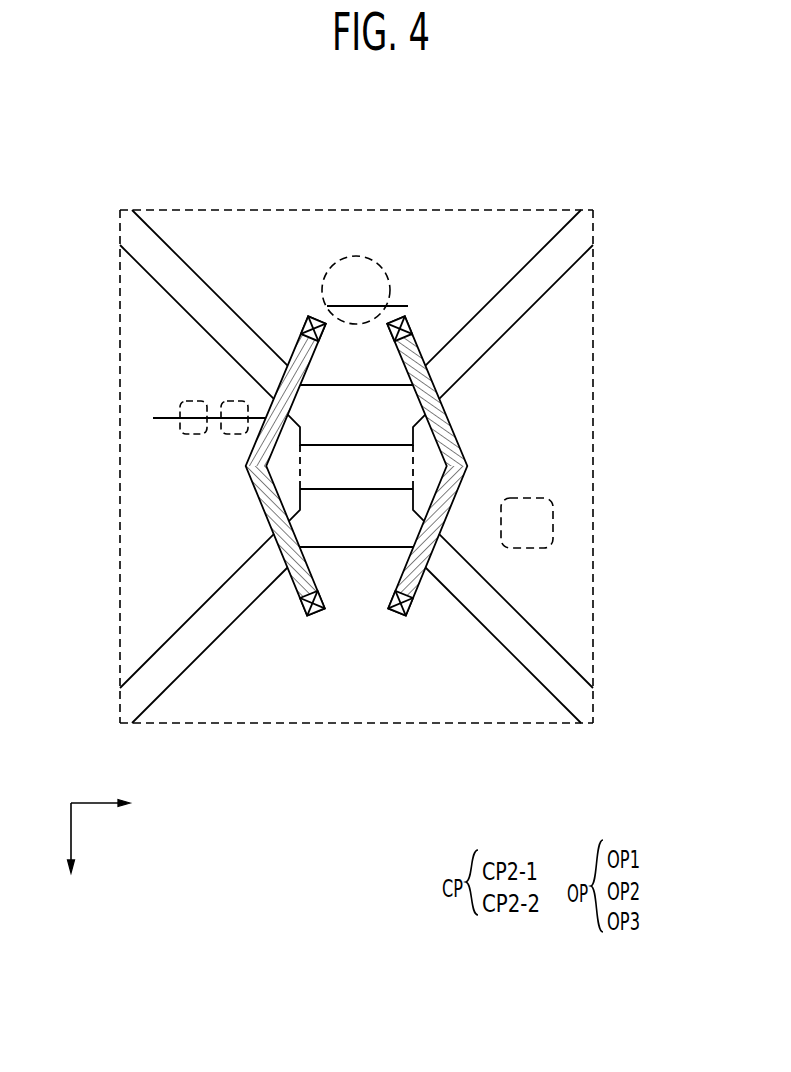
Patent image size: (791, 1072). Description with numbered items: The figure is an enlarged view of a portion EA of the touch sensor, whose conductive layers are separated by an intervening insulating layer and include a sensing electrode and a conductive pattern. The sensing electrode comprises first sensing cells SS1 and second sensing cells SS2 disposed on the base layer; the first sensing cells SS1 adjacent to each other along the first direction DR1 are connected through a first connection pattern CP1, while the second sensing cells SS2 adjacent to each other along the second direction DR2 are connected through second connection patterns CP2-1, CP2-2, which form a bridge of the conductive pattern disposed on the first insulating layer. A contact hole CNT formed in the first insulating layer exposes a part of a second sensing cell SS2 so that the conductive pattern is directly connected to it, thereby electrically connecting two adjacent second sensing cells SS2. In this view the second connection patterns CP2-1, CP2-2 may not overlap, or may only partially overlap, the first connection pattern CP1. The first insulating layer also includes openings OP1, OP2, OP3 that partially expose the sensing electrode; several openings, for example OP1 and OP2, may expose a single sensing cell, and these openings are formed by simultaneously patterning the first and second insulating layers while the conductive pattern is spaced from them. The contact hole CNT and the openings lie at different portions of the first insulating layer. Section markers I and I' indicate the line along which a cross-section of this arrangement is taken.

The portion of the touch sensor EA is at (361, 447).
The first sensing cell SS1 is at (135, 592).
The second sensing cell SS2 is at (232, 219).
The contact hole CNT is at (311, 319).
The opening OP1 is at (192, 435).
The opening OP2 is at (235, 435).
The opening OP3 is at (368, 256).
The first connection pattern CP1 is at (383, 479).
The second connection pattern CP2-1 is at (182, 385).
The second connection pattern CP2-2 is at (451, 427).
The section line I is at (202, 392).
The section line I' is at (374, 278).
The first direction DR1 is at (119, 810).
The second direction DR2 is at (73, 856).